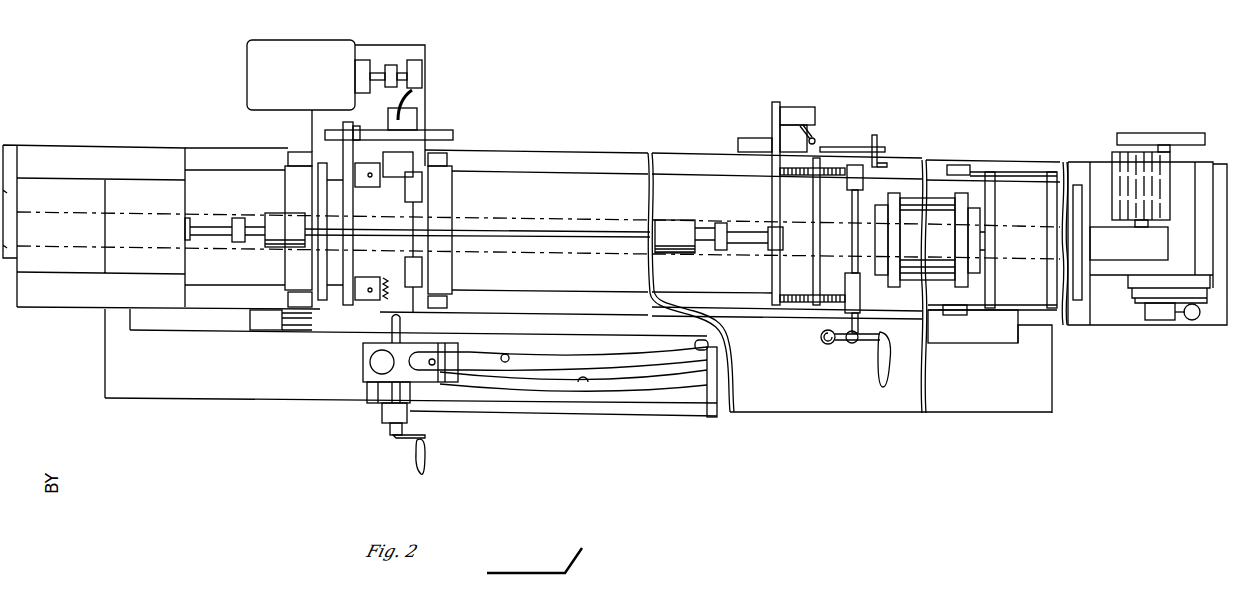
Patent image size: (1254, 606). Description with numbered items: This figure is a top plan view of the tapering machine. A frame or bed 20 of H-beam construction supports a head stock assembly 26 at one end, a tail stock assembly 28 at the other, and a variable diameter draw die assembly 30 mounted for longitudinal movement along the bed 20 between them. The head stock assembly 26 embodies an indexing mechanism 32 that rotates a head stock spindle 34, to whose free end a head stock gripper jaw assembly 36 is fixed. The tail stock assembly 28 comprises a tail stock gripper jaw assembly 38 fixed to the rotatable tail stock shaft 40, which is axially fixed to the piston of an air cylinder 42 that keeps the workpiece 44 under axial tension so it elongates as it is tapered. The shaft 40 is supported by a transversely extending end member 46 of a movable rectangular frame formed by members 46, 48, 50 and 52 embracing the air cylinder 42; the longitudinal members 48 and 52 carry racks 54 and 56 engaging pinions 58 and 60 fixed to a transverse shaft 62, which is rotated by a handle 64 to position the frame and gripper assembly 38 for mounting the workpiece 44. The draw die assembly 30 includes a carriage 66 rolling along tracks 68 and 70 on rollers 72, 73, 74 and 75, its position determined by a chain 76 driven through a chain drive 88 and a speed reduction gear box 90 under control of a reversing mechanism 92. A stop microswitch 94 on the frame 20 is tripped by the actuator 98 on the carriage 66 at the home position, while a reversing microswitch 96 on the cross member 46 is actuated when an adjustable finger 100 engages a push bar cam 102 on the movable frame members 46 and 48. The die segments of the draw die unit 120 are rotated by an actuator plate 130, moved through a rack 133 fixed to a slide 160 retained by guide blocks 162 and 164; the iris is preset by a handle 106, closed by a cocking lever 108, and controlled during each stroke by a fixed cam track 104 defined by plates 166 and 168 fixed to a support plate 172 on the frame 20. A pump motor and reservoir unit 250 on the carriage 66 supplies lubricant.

The frame or bed 20 is at (624, 417).
The head stock assembly 26 is at (80, 160).
The tail stock assembly 28 is at (950, 135).
The variable diameter draw die assembly 30 is at (350, 322).
The indexing mechanism 32 is at (105, 237).
The head stock spindle 34 is at (218, 227).
The head stock gripper jaw assembly 36 is at (272, 212).
The tail stock gripper jaw assembly 38 is at (684, 218).
The tail stock shaft 40 is at (758, 210).
The air cylinder 42 is at (950, 236).
The workpiece 44 is at (315, 221).
The end member 46 is at (770, 272).
The longitudinally extending frame member 48 is at (985, 172).
The frame member 50 is at (1048, 244).
The longitudinally extending frame member 52 is at (977, 310).
The rack 54 is at (832, 165).
The rack 56 is at (793, 302).
The pinion 58 is at (859, 165).
The pinion 60 is at (848, 274).
The transverse shaft 62 is at (850, 207).
The handle 64 is at (852, 342).
The carriage 66 is at (455, 168).
The track 68 is at (512, 153).
The track 70 is at (505, 290).
The roller 72 is at (440, 154).
The roller 73 is at (296, 152).
The roller 74 is at (303, 291).
The roller 75 is at (438, 295).
The chain 76 is at (160, 213).
The chain drive 88 is at (1192, 133).
The speed reduction gear box 90 is at (1234, 133).
The reversing mechanism 92 is at (1151, 325).
The stop microswitch 94 is at (265, 330).
The reversing microswitch 96 is at (794, 107).
The microswitch actuator 98 is at (292, 332).
The adjustable finger 100 is at (430, 130).
The push bar cam 102 is at (742, 138).
The cam track 104 is at (582, 382).
The handle 106 is at (413, 459).
The cocking lever 108 is at (477, 372).
The draw die unit 120 is at (333, 287).
The actuator plate 130 is at (319, 186).
The rack 133 is at (373, 231).
The slide 160 is at (373, 416).
The guide block 162 is at (417, 268).
The guide block 164 is at (418, 200).
The plate 166 is at (664, 383).
The plate 168 is at (699, 340).
The support plate 172 is at (691, 417).
The pump motor and reservoir unit 250 is at (298, 38).